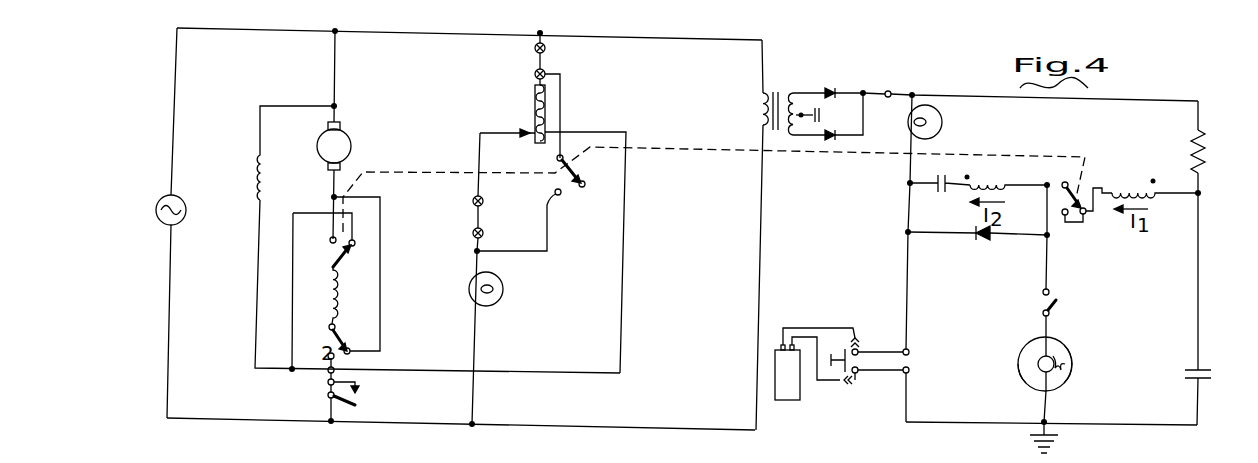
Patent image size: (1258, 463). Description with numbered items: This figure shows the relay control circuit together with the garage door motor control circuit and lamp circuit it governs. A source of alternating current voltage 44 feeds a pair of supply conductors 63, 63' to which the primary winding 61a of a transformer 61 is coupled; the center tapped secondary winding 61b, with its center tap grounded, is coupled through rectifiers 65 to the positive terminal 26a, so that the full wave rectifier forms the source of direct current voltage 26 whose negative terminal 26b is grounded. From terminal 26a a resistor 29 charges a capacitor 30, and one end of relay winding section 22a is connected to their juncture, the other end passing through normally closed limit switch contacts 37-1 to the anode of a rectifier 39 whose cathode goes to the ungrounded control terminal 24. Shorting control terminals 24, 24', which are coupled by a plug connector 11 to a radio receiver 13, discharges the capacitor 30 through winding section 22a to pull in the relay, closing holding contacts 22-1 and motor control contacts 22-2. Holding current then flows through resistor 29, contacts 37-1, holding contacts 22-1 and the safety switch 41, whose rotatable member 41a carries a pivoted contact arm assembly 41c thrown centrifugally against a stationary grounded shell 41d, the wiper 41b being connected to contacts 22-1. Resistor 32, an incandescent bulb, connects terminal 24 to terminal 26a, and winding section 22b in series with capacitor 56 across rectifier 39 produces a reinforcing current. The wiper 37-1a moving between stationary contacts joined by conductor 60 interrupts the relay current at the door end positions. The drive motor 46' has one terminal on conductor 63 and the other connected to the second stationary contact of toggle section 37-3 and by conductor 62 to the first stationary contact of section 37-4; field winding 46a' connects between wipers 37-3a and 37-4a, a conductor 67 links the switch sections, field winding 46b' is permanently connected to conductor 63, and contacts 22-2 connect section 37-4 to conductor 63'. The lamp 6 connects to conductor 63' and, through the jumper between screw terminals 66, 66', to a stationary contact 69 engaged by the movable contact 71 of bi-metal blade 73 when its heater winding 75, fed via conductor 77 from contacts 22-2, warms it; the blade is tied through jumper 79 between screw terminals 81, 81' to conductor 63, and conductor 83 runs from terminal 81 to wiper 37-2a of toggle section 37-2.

The source of alternating current voltage 44 is at (185, 206).
The drive motor 46' is at (353, 142).
The field winding 46b' is at (295, 153).
The field winding 46a' is at (269, 295).
The conductor 67 is at (293, 226).
The conductor 62 is at (386, 223).
The toggle switch section 37-3 is at (328, 263).
The wiper 37-3a is at (346, 262).
The toggle switch section 37-4 is at (322, 337).
The wiper 37-4a is at (343, 336).
The motor control contacts 22-2 is at (352, 400).
The supply conductor 63 is at (469, 45).
The supply conductor 63' is at (461, 413).
The screw terminal 66 is at (453, 198).
The screw terminal 66' is at (455, 253).
The incandescent lamp 6 is at (497, 278).
The stationary contact 69 is at (518, 133).
The movable contact 71 is at (537, 121).
The bi-metal blade 73 is at (548, 95).
The heater winding 75 is at (535, 98).
The jumper 79 is at (546, 48).
The screw terminal 81 is at (516, 78).
The screw terminal 81' is at (514, 53).
The conductor 83 is at (562, 108).
The toggle switch section 37-2 is at (555, 168).
The wiper 37-2a is at (577, 163).
The conductor 77 is at (627, 211).
The transformer 61 is at (751, 87).
The primary winding 61a is at (758, 116).
The center tapped secondary winding 61b is at (796, 98).
The rectifier 65 is at (840, 92).
The source of direct current voltage 26 is at (833, 116).
The positive terminal 26a is at (893, 92).
The negative voltage terminal 26b is at (802, 120).
The resistor 32 is at (931, 105).
The capacitor 56 is at (944, 177).
The winding section 22b is at (1008, 170).
The limit switch contacts 37-1 is at (1071, 186).
The wiper 37-1a is at (1083, 194).
The winding section 22a is at (1127, 192).
The resistor 29 is at (1205, 152).
The conductor 60 is at (1075, 223).
The rectifier 39 is at (979, 243).
The holding contacts 22-1 is at (1058, 297).
The safety switch 41 is at (989, 357).
The rotatable member 41a is at (1066, 387).
The wiper 41b is at (1037, 345).
The pivoted contact arm assembly 41c is at (1061, 363).
The stationary grounded shell 41d is at (1020, 381).
The capacitor 30 is at (1200, 368).
The control terminal 24 is at (883, 335).
The control terminal 24' is at (882, 394).
The plug connector 11 is at (832, 352).
The radio receiver 13 is at (801, 384).